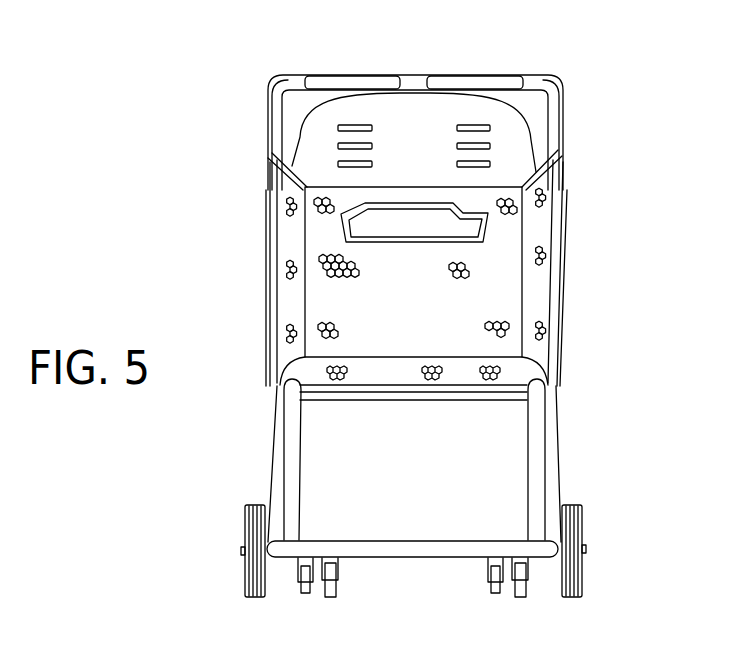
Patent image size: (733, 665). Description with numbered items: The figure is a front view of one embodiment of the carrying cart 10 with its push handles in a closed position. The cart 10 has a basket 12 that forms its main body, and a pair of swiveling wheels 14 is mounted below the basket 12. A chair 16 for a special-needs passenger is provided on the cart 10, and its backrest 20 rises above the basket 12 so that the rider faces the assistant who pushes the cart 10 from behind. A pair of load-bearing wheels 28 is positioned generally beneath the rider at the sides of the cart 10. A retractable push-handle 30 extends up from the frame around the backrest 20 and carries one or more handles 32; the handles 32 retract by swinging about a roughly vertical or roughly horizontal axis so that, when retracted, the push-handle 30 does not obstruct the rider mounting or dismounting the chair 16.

The carrying cart 10 is at (672, 263).
The basket 12 is at (426, 325).
The swiveling wheels 14 is at (305, 593).
The chair 16 is at (296, 135).
The backrest 20 is at (428, 147).
The load-bearing wheels 28 is at (245, 523).
The push-handle 30 is at (283, 73).
The handles 32 is at (459, 74).